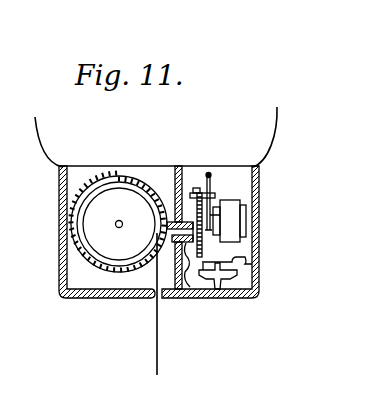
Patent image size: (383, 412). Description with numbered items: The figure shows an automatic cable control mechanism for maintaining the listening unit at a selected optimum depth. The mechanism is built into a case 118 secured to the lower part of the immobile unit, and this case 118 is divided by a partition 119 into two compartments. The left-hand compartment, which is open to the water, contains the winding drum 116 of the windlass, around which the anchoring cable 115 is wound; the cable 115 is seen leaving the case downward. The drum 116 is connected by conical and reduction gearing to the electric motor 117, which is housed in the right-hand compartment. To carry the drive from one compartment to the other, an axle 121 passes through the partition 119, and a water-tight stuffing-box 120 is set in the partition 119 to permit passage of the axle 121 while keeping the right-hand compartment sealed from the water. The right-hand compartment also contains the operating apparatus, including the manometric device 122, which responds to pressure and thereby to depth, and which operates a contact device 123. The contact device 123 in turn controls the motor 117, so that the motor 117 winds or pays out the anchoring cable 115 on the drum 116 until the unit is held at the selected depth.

The anchoring cable 115 is at (157, 335).
The winding drum 116 is at (93, 224).
The electric motor 117 is at (230, 215).
The case 118 is at (259, 238).
The partition 119 is at (190, 288).
The water-tight stuffing-box 120 is at (218, 289).
The axle 121 is at (174, 205).
The manometric device 122 is at (262, 292).
The contact device 123 is at (252, 264).